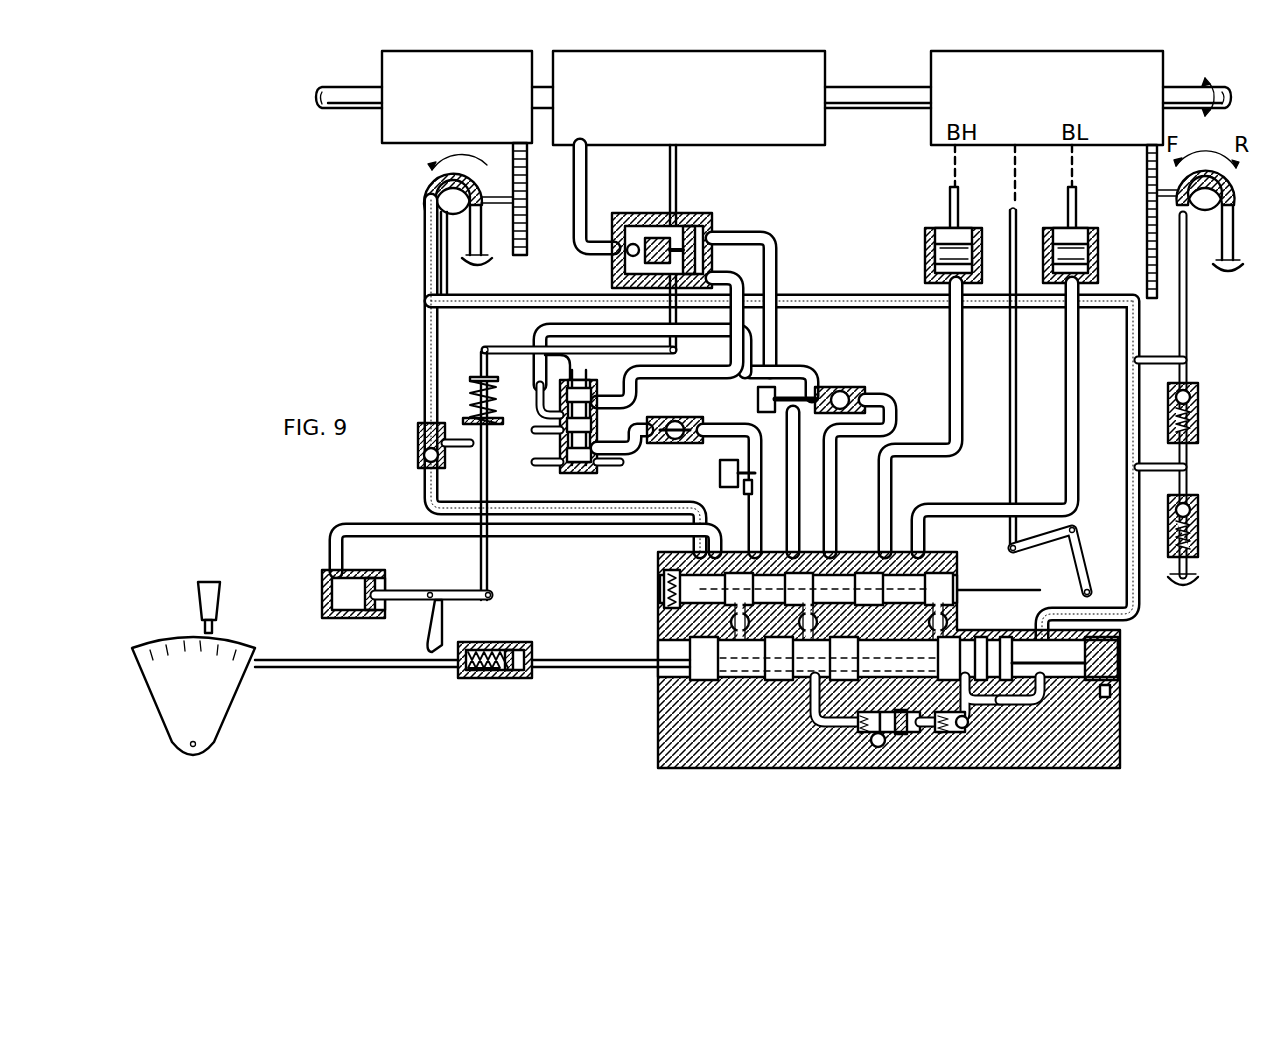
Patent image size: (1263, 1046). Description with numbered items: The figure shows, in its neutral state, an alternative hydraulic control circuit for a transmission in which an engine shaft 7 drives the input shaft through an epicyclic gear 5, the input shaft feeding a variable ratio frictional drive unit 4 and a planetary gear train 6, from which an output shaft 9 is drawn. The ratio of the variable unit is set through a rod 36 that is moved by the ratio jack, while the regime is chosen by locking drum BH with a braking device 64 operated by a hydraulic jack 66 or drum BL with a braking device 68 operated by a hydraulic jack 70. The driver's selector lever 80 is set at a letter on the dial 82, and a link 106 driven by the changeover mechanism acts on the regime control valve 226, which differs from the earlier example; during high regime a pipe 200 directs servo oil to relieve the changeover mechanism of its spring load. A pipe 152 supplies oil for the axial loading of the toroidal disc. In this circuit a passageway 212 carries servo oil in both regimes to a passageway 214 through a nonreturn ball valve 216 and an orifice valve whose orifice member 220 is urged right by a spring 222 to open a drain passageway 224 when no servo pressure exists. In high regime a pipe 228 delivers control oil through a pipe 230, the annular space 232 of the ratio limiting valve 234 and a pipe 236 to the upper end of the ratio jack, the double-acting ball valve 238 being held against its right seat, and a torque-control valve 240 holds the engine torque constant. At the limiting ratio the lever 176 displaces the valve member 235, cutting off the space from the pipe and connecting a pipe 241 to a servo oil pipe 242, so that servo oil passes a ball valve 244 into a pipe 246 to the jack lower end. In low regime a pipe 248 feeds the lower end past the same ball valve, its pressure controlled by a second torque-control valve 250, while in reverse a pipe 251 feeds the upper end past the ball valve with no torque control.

The variable ratio frictional drive unit 4 is at (691, 109).
The epicyclic gear 5 is at (466, 109).
The planetary gear train 6 is at (1051, 109).
The engine shaft 7 is at (320, 93).
The output shaft 9 is at (1178, 88).
The rod 36 is at (680, 170).
The braking device 64 is at (948, 206).
The hydraulic jack 66 is at (922, 262).
The braking device 68 is at (1078, 206).
The hydraulic jack 70 is at (1128, 262).
The selector lever 80 is at (208, 582).
The dial 82 is at (222, 703).
The link 106 is at (1010, 226).
The pipe 152 is at (586, 176).
The lever 176 is at (485, 345).
The pipe 200 is at (968, 515).
The passageway 212 is at (1020, 725).
The passageway 214 is at (818, 735).
The nonreturn ball valve 216 is at (968, 732).
The orifice member 220 is at (935, 735).
The spring 222 is at (862, 740).
The drain passageway 224 is at (880, 748).
The regime control valve 226 is at (1115, 646).
The pipe 228 is at (800, 462).
The pipe 230 is at (812, 370).
The annular space 232 is at (598, 408).
The ratio limiting valve 234 is at (553, 376).
The valve member 235 is at (555, 378).
The pipe 236 is at (777, 245).
The double-acting ball valve 238 is at (850, 385).
The torque-control valve 240 is at (766, 385).
The pipe 241 is at (622, 465).
The servo oil pipe 242 is at (462, 455).
The ball valve 244 is at (662, 442).
The pipe 246 is at (760, 286).
The pipe 248 is at (744, 490).
The second torque-control valve 250 is at (720, 468).
The pipe 251 is at (880, 392).